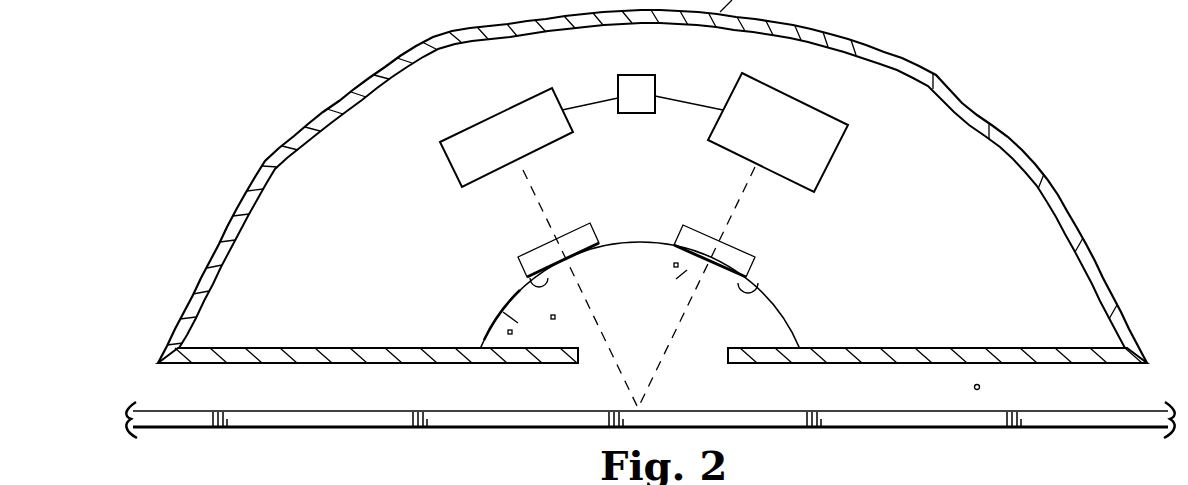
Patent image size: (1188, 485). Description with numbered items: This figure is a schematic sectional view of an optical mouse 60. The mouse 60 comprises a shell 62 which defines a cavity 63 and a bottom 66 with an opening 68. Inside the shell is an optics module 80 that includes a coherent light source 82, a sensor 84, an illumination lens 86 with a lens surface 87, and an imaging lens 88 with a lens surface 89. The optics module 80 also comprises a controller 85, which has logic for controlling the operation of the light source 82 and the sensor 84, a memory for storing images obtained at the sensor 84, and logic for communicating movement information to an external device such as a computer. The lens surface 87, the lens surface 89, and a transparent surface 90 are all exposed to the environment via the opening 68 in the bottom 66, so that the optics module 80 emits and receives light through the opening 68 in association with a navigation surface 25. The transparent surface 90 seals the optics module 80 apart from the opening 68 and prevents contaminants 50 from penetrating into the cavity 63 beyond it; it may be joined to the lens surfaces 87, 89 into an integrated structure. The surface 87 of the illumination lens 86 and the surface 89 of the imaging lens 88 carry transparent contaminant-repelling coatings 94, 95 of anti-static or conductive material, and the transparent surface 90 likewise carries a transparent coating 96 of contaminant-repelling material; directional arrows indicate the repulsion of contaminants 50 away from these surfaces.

The navigation surface 25 is at (770, 410).
The contaminants 50 is at (674, 266).
The optical mouse 60 is at (659, 181).
The shell 62 is at (1063, 193).
The cavity 63 is at (1001, 251).
The bottom 66 is at (847, 364).
The opening 68 is at (729, 362).
The optics module 80 is at (647, 219).
The coherent light source 82 is at (833, 163).
The sensor 84 is at (441, 152).
The controller 85 is at (637, 74).
The illumination lens 86 is at (736, 233).
The lens surface 87 is at (752, 258).
The imaging lens 88 is at (549, 231).
The lens surface 89 is at (560, 258).
The transparent surface 90 is at (790, 318).
The contaminant-repelling coating 94 is at (762, 290).
The contaminant-repelling coating 95 is at (532, 283).
The transparent coating 96 is at (498, 330).